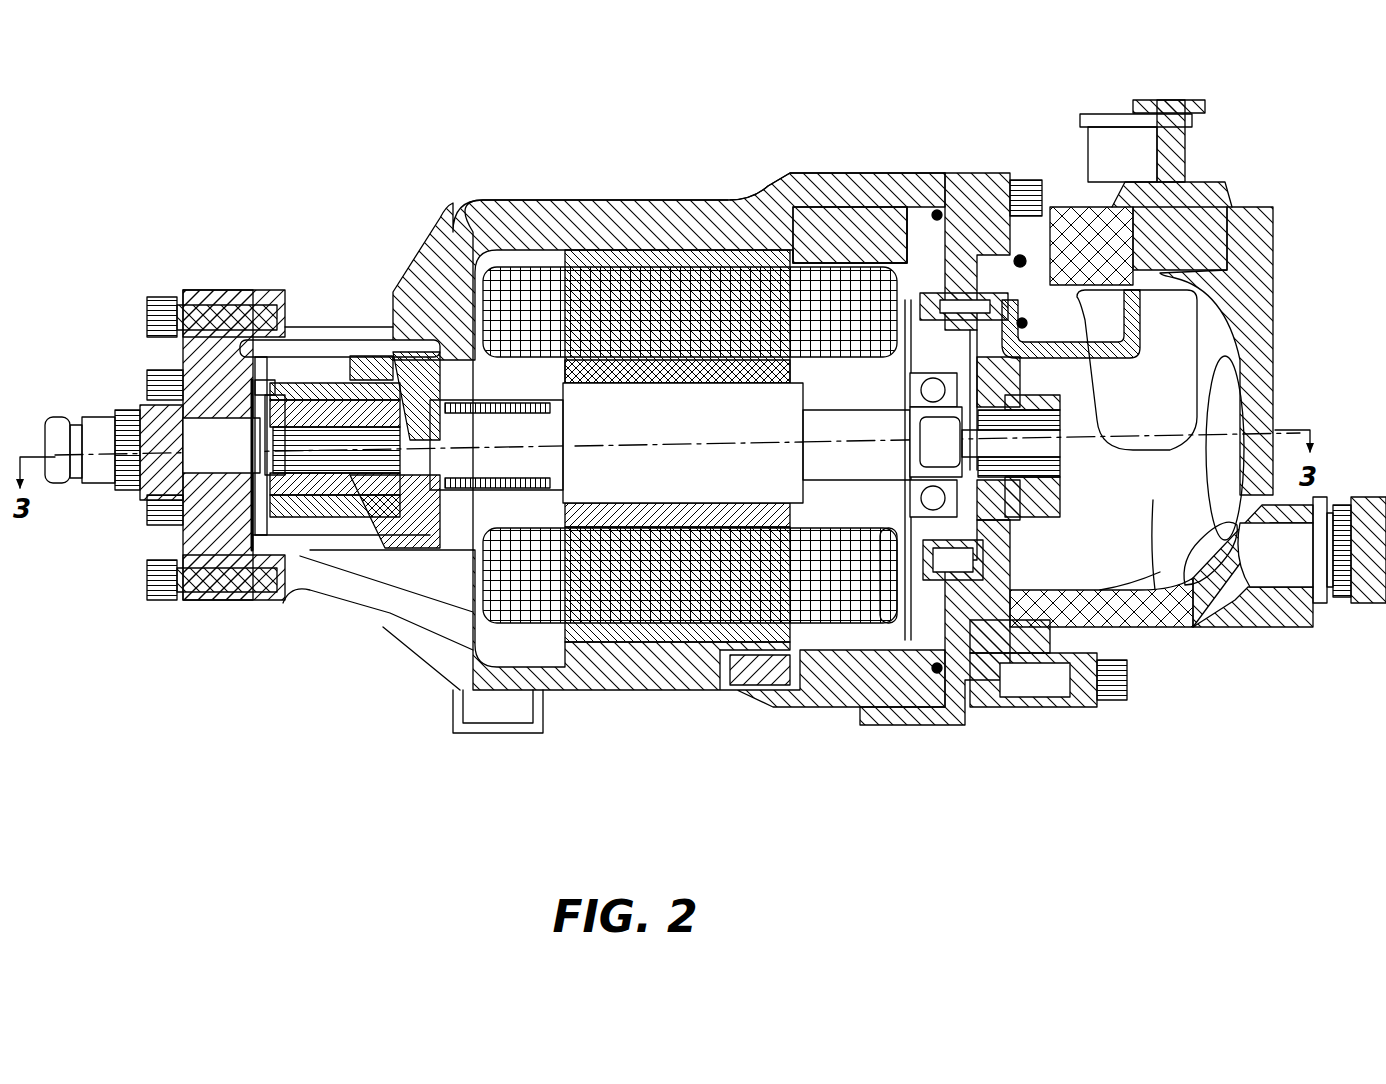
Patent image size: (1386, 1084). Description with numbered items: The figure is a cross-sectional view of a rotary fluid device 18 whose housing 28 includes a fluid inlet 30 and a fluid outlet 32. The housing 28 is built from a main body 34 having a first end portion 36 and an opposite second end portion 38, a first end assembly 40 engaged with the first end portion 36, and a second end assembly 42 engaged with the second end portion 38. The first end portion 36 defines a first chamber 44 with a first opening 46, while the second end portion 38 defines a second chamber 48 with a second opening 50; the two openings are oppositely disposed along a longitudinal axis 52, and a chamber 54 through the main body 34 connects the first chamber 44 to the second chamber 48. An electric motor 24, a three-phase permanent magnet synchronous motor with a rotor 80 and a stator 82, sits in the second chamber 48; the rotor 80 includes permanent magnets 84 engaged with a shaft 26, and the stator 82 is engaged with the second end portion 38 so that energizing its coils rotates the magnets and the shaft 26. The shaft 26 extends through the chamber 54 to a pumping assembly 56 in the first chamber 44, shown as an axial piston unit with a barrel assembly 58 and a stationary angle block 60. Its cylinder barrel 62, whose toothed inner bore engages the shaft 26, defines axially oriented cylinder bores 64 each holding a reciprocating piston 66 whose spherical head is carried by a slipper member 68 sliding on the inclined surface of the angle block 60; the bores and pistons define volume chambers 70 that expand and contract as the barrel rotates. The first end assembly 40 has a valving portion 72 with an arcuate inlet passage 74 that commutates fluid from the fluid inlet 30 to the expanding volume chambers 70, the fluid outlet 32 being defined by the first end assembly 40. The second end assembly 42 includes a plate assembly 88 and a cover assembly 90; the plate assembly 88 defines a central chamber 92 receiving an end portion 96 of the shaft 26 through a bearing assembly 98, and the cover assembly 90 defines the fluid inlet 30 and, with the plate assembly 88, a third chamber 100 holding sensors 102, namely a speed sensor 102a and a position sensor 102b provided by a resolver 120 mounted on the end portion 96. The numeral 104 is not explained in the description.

The rotary fluid device 18 is at (310, 128).
The electric motor 24 is at (840, 245).
The shaft 26 is at (645, 490).
The housing 28 is at (735, 152).
The fluid inlet 30 is at (1352, 613).
The fluid outlet 32 is at (85, 490).
The main body 34 is at (445, 675).
The first end portion 36 is at (343, 598).
The second end portion 38 is at (770, 705).
The first end assembly 40 is at (178, 548).
The second end assembly 42 is at (1245, 178).
The first chamber 44 is at (325, 340).
The first opening 46 is at (208, 298).
The second chamber 48 is at (668, 630).
The second opening 50 is at (915, 655).
The longitudinal axis 52 is at (665, 445).
The chamber 54 is at (490, 385).
The pumping assembly 56 is at (300, 555).
The barrel assembly 58 is at (238, 560).
The angle block 60 is at (418, 330).
The cylinder barrel 62 is at (275, 560).
The cylinder bores 64 is at (295, 392).
The piston 66 is at (362, 337).
The slipper member 68 is at (407, 330).
The volume chambers 70 is at (292, 305).
The valving portion 72 is at (205, 375).
The inlet passage 74 is at (258, 305).
The rotor 80 is at (800, 520).
The stator 82 is at (540, 275).
The permanent magnets 84 is at (795, 380).
The plate assembly 88 is at (1000, 172).
The cover assembly 90 is at (1195, 628).
The central chamber 92 is at (908, 395).
The end portion 96 is at (1040, 515).
The bearing assembly 98 is at (908, 492).
The third chamber 100 is at (1130, 573).
The sensors 102 is at (1005, 289).
The speed sensor 102a is at (1062, 500).
The position sensor 102b is at (1058, 470).
The housing neck wall 104 is at (428, 590).
The resolver 120 is at (1075, 500).